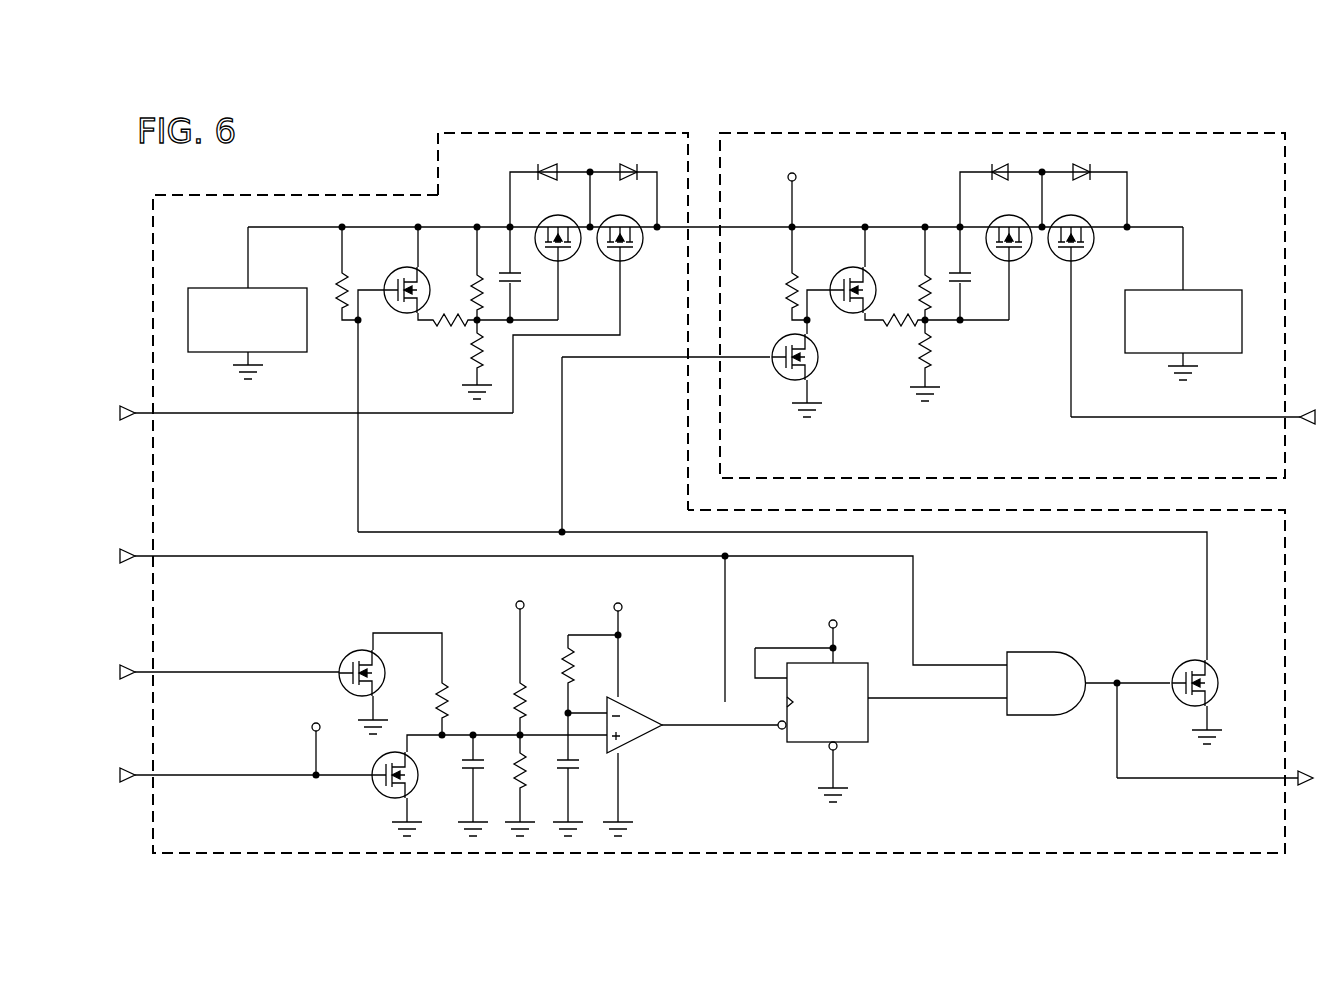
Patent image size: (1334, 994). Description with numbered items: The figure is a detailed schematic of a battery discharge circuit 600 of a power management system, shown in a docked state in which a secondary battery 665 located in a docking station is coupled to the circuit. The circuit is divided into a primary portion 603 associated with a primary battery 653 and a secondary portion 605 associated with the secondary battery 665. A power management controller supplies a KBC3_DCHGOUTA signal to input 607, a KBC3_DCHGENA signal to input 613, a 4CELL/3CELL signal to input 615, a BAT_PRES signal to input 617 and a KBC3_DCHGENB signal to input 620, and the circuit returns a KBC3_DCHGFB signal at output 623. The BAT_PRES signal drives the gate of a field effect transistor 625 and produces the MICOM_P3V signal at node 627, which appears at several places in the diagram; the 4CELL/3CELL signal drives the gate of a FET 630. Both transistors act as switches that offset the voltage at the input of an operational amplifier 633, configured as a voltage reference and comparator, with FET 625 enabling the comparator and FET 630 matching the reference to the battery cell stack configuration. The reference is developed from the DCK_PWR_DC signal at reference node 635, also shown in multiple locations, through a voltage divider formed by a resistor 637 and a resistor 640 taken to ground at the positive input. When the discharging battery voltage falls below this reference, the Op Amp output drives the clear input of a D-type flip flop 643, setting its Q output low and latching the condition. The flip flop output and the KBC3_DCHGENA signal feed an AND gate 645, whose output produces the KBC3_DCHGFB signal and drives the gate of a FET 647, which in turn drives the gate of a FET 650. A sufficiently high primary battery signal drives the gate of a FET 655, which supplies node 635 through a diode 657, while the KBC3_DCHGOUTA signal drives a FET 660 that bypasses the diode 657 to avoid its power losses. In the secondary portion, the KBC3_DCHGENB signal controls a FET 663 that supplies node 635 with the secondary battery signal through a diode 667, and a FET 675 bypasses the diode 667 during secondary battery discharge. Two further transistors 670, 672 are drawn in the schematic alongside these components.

The battery discharge circuit 600 is at (340, 157).
The primary portion 603 is at (515, 133).
The secondary portion 605 is at (1158, 133).
The input 607 is at (167, 413).
The input 613 is at (170, 556).
The input 615 is at (165, 672).
The input 617 is at (168, 775).
The input 620 is at (1225, 417).
The output 623 is at (1225, 780).
The Field Effect Transistor 625 is at (376, 764).
The node 627 is at (316, 752).
The FET 630 is at (355, 652).
The operational amplifier 633 is at (638, 741).
The reference node 635 is at (797, 192).
The resistor 637 is at (517, 688).
The resistor 640 is at (522, 780).
The D-type flip flop 643 is at (857, 742).
The AND gate 645 is at (1028, 715).
The FET 647 is at (1183, 662).
The FET 650 is at (418, 268).
The primary battery 653 is at (285, 288).
The FET 655 is at (566, 261).
The diode 657 is at (627, 180).
The FET 660 is at (628, 261).
The FET 663 is at (1079, 261).
The secondary battery 665 is at (1200, 290).
The diode 667 is at (999, 178).
The transistor 670 is at (812, 372).
The transistor 672 is at (836, 275).
The FET 675 is at (1017, 261).